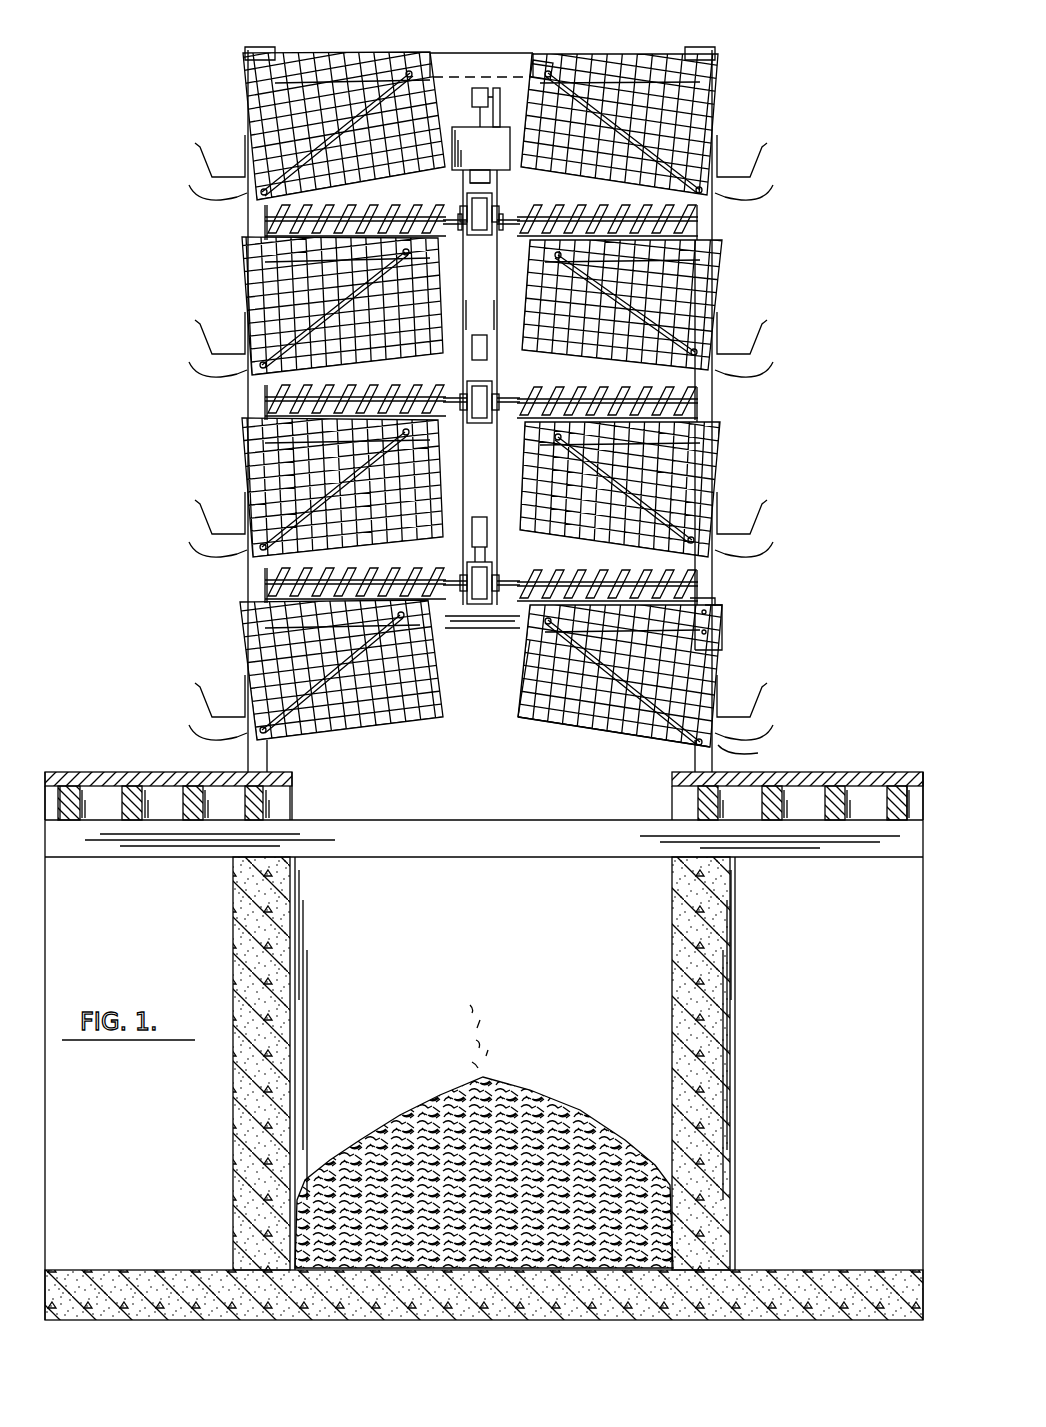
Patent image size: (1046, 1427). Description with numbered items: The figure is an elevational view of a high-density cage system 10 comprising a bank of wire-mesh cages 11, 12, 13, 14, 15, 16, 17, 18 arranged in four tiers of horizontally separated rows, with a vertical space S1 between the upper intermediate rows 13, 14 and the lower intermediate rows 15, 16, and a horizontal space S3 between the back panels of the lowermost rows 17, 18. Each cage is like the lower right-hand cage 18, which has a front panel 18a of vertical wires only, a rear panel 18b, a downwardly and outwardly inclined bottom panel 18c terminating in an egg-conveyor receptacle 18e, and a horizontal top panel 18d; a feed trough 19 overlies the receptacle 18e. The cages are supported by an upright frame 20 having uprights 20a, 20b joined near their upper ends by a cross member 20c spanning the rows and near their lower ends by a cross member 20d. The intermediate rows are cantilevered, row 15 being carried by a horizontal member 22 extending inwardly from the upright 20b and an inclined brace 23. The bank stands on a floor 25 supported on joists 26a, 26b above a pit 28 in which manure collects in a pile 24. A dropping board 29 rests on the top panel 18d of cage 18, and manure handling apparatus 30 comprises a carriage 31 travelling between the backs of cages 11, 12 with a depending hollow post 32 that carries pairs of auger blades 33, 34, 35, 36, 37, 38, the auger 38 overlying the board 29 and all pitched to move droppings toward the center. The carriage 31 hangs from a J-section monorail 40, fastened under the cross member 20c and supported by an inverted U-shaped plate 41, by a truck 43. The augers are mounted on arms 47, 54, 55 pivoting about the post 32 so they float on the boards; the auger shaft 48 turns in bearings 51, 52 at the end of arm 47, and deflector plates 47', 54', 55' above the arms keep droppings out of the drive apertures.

The high-density cage system 10 is at (778, 92).
The cage 11 is at (293, 100).
The cage 12 is at (688, 106).
The cage row 13 is at (295, 278).
The cage row 14 is at (670, 283).
The cage row 15 is at (290, 466).
The cage row 16 is at (680, 462).
The cage row 17 is at (290, 643).
The cage 18 is at (648, 644).
The front panel 18a is at (715, 662).
The rear panel 18b is at (463, 730).
The bottom panel 18c is at (572, 725).
The top panel 18d is at (722, 618).
The receptacle 18e is at (760, 748).
The feed trough 19 is at (757, 712).
The upright frame 20 is at (463, 62).
The upright 20a is at (724, 432).
The upright 20b is at (262, 390).
The cross member 20c is at (516, 62).
The cross member 20d is at (468, 628).
The horizontal member 22 is at (282, 418).
The inclined brace 23 is at (316, 496).
The pile 24 is at (437, 1093).
The floor 25 is at (168, 772).
The joist 26a is at (270, 803).
The joist 26b is at (487, 850).
The pit 28 is at (673, 1085).
The dropping board 29 is at (712, 608).
The manure handling apparatus 30 is at (455, 165).
The carriage 31 is at (502, 213).
The post portion 32 is at (490, 320).
The auger blade 33 is at (333, 208).
The auger blade 34 is at (648, 212).
The auger blade 35 is at (375, 390).
The auger blade 36 is at (603, 392).
The auger blade 37 is at (372, 580).
The auger blade 38 is at (598, 578).
The monorail 40 is at (481, 88).
The inverted U-shaped plate 41 is at (447, 72).
The truck 43 is at (502, 102).
The arm 47 is at (479, 236).
The deflector plate 47' is at (460, 194).
The auger shaft 48 is at (515, 216).
The bearing 51 is at (463, 232).
The bearing 52 is at (500, 232).
The arm 54 is at (481, 418).
The deflector plate 54' is at (509, 454).
The arm 55 is at (477, 578).
The deflector plate 55' is at (508, 555).
The space S1 is at (718, 393).
The space S3 is at (473, 752).